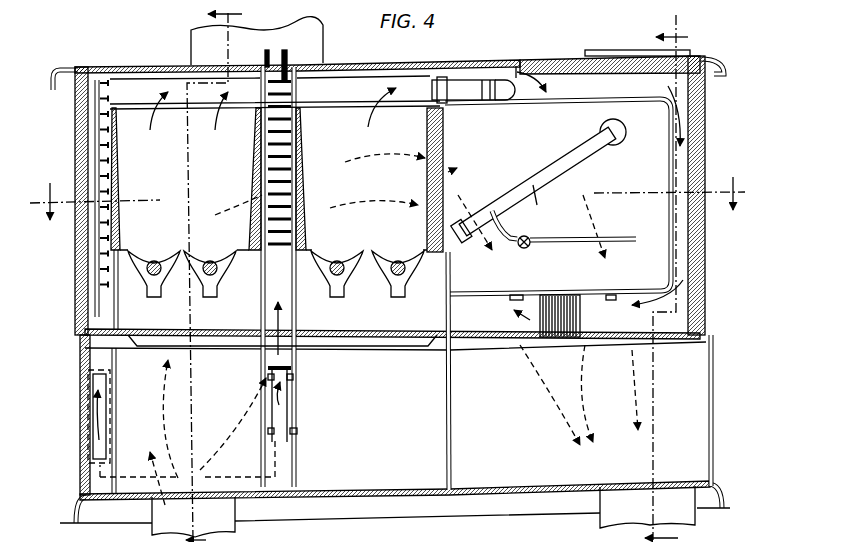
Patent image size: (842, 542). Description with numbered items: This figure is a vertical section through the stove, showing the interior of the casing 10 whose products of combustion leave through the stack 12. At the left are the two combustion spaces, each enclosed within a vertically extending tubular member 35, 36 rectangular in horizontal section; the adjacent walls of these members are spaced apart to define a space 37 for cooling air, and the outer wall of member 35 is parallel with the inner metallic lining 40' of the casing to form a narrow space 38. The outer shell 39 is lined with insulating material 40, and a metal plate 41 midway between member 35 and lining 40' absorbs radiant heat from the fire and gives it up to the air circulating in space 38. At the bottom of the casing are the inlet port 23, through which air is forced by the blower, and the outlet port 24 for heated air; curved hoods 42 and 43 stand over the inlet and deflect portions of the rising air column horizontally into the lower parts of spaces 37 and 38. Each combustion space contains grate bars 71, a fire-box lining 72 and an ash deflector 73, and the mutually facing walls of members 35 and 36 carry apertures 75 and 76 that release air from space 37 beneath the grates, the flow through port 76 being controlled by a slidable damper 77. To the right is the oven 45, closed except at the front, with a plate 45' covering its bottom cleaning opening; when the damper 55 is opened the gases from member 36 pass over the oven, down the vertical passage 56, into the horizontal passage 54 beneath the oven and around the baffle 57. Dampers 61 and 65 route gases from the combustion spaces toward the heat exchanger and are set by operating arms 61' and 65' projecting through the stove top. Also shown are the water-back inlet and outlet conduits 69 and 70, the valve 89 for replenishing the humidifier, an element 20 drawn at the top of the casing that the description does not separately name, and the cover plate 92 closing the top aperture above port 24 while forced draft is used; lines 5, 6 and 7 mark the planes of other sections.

The section line 5- 5 is at (386, 198).
The section line 6- 6 is at (214, 274).
The section line 7- 7 is at (666, 276).
The casing 10 is at (86, 270).
The stack 12 is at (191, 40).
The top insulating block 20 is at (516, 62).
The inlet port 23 is at (238, 518).
The outlet port 24 is at (687, 519).
The tubular member 35 is at (265, 356).
The tubular member 36 is at (447, 382).
The space 37 is at (283, 297).
The space 38 is at (100, 147).
The outer shell 39 is at (705, 127).
The insulating material 40 is at (393, 195).
The inner metallic lining 40' is at (62, 393).
The plate 41 is at (98, 242).
The hood 42 is at (266, 420).
The hood 43 is at (136, 419).
The oven 45 is at (599, 196).
The plate 45' is at (554, 276).
The horizontal passage 54 is at (530, 340).
The damper 55 is at (570, 88).
The vertical passage 56 is at (688, 173).
The baffle 57 is at (560, 312).
The damper 61 is at (275, 84).
The operating arm 61' is at (253, 51).
The damper 65 is at (300, 158).
The operating arm 65' is at (301, 56).
The inlet conduit 69 is at (537, 192).
The outlet conduit 70 is at (474, 92).
The grate bars 71 is at (183, 255).
The fire-box lining 72 is at (120, 200).
The ash deflector 73 is at (130, 342).
The aperture 75 is at (268, 392).
The aperture 76 is at (298, 434).
The slidable damper 77 is at (285, 418).
The valve 89 is at (524, 248).
The cover plate 92 is at (613, 52).